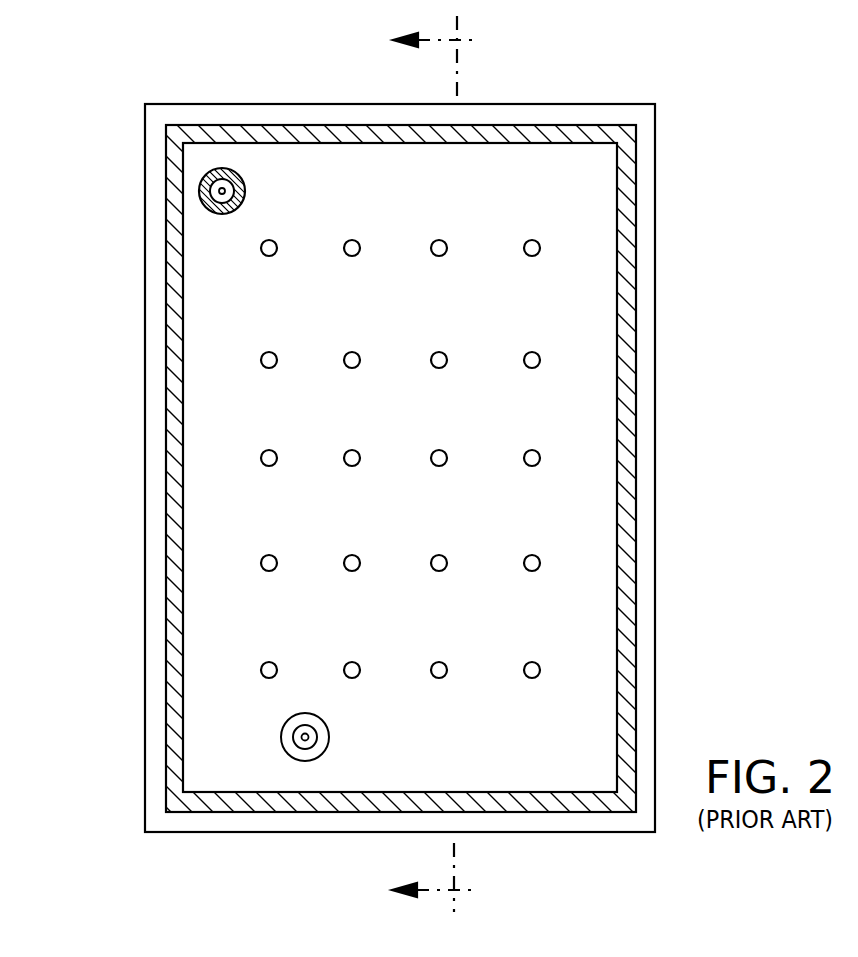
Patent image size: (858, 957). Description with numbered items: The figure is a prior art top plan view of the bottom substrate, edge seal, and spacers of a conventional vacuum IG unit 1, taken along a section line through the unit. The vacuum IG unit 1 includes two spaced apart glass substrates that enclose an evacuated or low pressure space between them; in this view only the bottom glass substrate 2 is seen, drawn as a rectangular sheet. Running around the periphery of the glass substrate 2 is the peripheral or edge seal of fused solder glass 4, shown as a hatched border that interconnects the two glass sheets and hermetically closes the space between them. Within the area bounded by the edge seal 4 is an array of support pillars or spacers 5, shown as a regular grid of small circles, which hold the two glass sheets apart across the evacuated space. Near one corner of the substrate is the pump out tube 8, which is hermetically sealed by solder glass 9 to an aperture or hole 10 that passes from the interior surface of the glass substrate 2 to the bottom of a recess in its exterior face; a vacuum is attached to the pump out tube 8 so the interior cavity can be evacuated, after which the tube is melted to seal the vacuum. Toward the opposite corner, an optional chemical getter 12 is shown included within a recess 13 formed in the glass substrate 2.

The vacuum IG unit 1 is at (429, 487).
The glass substrate 2 is at (397, 115).
The peripheral or edge seal of fused solder glass 4 is at (283, 121).
The support pillars or spacers 5 is at (540, 359).
The pump out tube 8 is at (199, 186).
The solder glass 9 is at (224, 216).
The aperture or hole 10 is at (219, 192).
The chemical getter 12 is at (303, 742).
The recess 13 is at (323, 735).